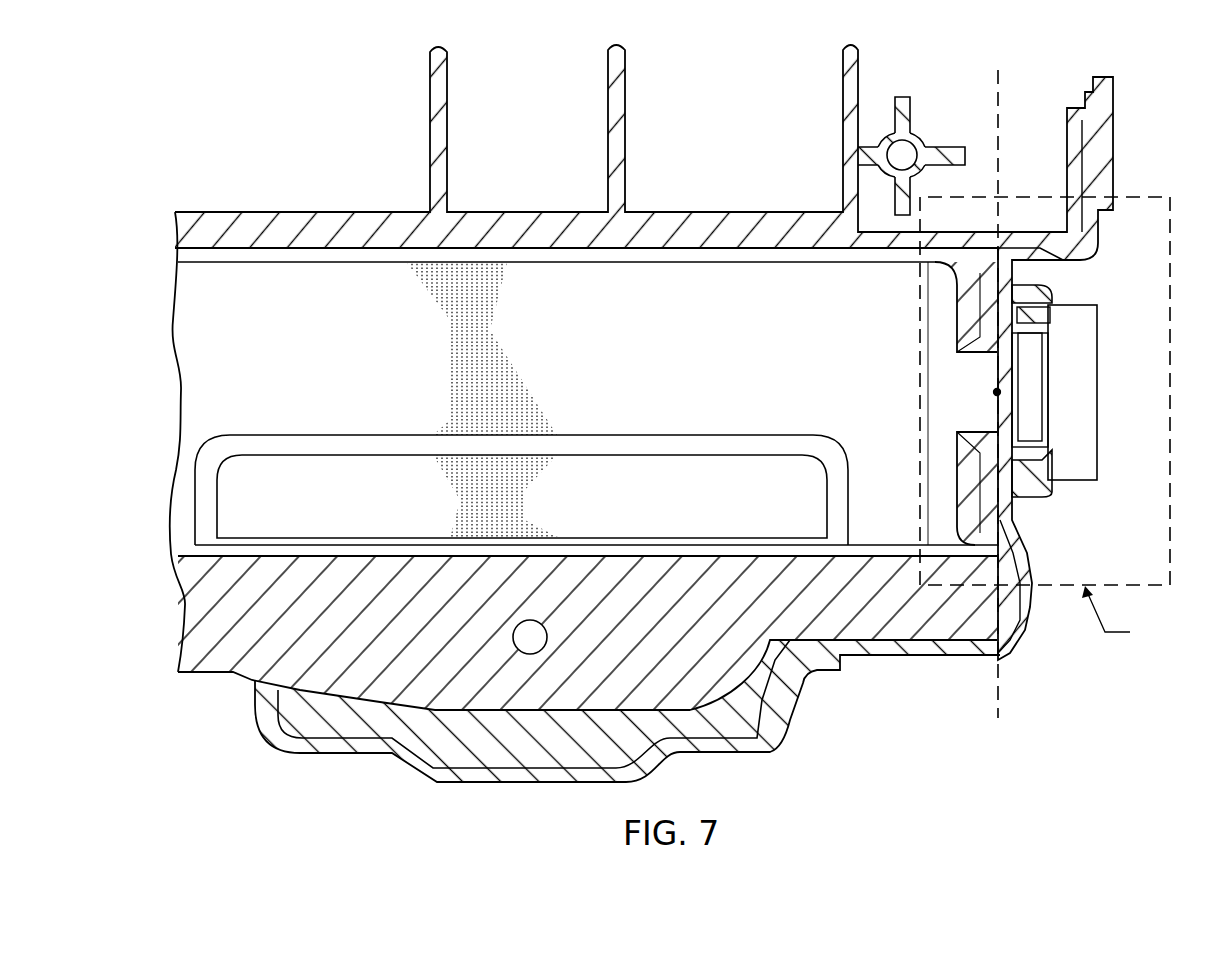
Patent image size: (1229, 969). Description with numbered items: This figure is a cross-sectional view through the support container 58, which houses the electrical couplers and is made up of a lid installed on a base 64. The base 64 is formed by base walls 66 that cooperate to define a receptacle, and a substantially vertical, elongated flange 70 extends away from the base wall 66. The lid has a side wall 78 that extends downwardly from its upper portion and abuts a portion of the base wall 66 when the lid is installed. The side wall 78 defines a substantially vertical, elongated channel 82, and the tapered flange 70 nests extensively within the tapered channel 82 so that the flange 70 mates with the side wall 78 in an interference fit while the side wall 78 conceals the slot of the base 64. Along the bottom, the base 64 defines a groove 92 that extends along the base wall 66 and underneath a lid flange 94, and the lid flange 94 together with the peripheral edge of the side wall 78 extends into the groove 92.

The support container 58 is at (1113, 686).
The base 64 is at (147, 637).
The base wall 66 is at (297, 208).
The substantially vertical, elongated flange 70 is at (1043, 270).
The side wall 78 is at (1022, 565).
The substantially vertical, elongated channel 82 is at (1052, 318).
The groove 92 is at (262, 698).
The lid flange 94 is at (467, 775).